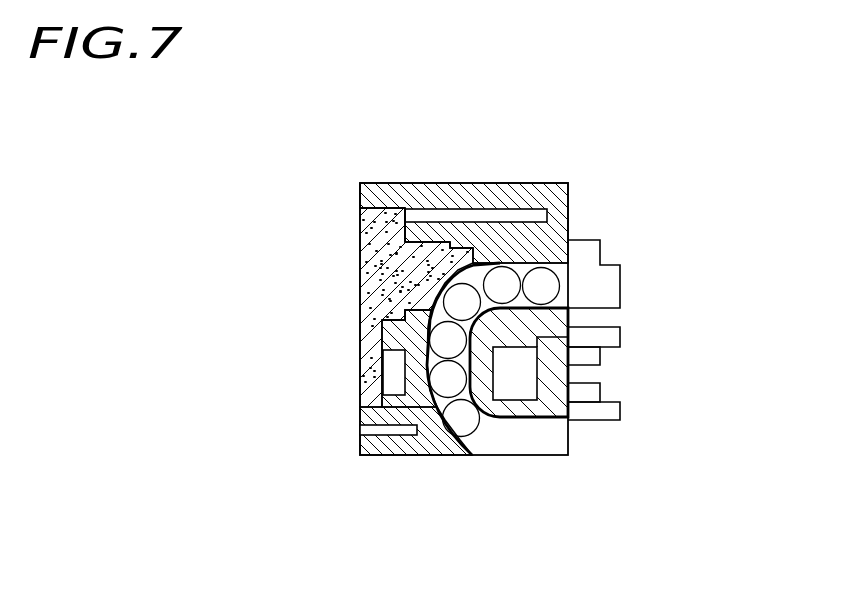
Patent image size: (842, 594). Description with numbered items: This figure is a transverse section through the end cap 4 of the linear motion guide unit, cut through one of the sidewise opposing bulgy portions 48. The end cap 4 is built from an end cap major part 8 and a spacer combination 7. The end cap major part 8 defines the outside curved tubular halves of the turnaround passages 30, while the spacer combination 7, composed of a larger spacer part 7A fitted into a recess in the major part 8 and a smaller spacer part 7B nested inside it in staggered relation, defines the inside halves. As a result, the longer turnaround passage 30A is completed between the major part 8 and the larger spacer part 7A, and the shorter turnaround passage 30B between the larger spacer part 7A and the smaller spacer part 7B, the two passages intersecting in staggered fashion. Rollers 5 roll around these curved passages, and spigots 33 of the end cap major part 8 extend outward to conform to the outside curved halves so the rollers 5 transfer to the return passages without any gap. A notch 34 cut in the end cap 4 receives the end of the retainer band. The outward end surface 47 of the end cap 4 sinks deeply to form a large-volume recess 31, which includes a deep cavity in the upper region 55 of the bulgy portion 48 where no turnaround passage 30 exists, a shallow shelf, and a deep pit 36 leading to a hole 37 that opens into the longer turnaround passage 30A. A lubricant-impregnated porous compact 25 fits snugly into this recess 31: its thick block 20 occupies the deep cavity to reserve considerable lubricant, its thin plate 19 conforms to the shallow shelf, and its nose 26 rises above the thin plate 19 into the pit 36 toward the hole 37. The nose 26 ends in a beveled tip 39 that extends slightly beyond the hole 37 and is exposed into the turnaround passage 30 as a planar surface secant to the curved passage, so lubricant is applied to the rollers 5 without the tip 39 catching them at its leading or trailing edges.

The end cap 4 is at (526, 177).
The rollers 5 is at (552, 280).
The spacer combination 7 is at (568, 350).
The larger spacer part 7A is at (472, 400).
The smaller spacer part 7B is at (562, 370).
The end cap major part 8 is at (497, 192).
The thin plate 19 is at (400, 318).
The thick block 20 is at (395, 300).
The porous compact 25 is at (380, 252).
The nose 26 is at (445, 258).
The turnaround passage 30 is at (513, 418).
The longer turnaround passage 30A is at (436, 418).
The shorter turnaround passage 30B is at (542, 418).
The recess 31 is at (384, 228).
The spigot 33 is at (592, 258).
The notch 34 is at (395, 384).
The deep pit 36 is at (423, 250).
The hole 37 is at (483, 207).
The beveled tip 39 is at (422, 322).
The outward end surface 47 is at (357, 190).
The bulgy portion 48 is at (412, 399).
The upper region 55 is at (422, 232).